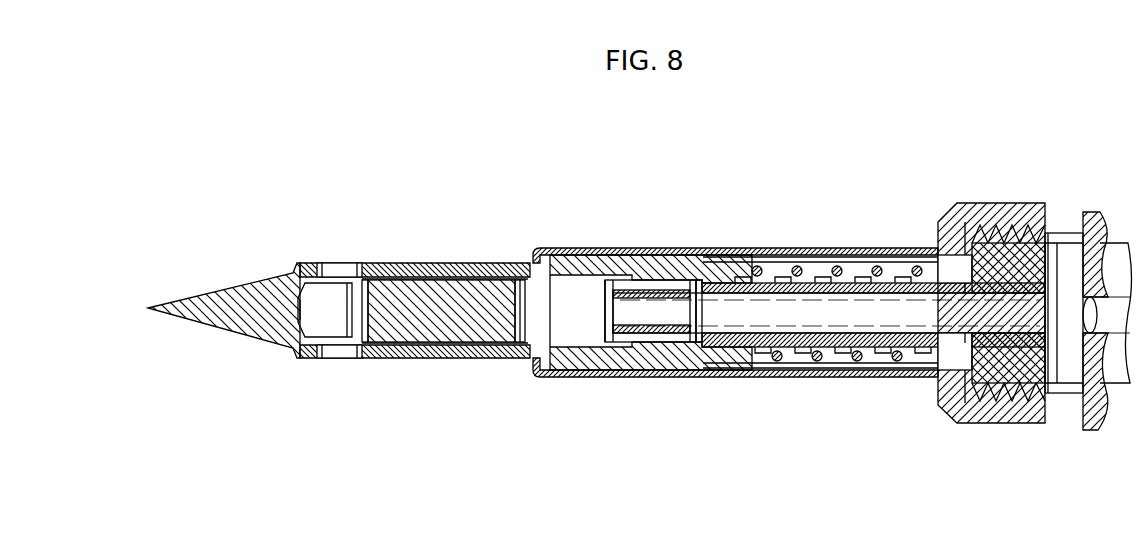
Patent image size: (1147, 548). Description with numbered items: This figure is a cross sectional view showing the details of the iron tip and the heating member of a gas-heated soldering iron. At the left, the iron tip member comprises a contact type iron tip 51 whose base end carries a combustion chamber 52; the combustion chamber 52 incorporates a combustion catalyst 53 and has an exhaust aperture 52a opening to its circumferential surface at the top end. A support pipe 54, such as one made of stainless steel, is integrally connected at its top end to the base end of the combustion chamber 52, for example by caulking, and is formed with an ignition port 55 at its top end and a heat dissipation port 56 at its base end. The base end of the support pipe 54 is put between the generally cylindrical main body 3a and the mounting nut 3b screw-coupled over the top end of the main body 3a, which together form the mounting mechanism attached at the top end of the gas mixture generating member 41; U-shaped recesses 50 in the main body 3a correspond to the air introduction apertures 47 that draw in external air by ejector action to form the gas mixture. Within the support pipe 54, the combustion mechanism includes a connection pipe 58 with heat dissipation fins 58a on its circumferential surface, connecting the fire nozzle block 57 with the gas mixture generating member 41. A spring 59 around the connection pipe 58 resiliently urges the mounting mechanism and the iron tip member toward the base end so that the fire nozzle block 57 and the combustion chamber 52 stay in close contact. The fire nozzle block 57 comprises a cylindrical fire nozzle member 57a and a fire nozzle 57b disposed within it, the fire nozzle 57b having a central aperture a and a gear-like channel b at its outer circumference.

The contact type iron tip 51 is at (178, 297).
The combustion chamber 52 is at (340, 330).
The exhaust aperture 52a is at (320, 264).
The combustion catalyst 53 is at (455, 292).
The support pipe 54 is at (700, 254).
The ignition port 55 is at (560, 249).
The heat dissipation port 56 is at (850, 250).
The fire nozzle block 57 is at (638, 266).
The fire nozzle member 57a is at (628, 375).
The fire nozzle 57b is at (667, 375).
The connection pipe 58 is at (802, 315).
The heat dissipation fins 58a is at (883, 350).
The spring 59 is at (787, 257).
The main body 3a is at (1000, 205).
The mounting nut 3b is at (945, 216).
The gas mixture generating member 41 is at (990, 400).
The air introduction aperture 47 is at (1058, 375).
The U-shaped recess 50 is at (1063, 235).
The central aperture a is at (617, 312).
The gear-like channel b is at (606, 337).